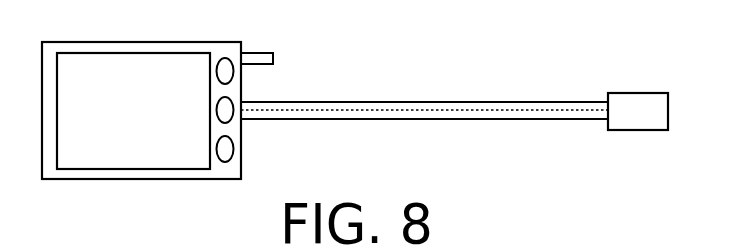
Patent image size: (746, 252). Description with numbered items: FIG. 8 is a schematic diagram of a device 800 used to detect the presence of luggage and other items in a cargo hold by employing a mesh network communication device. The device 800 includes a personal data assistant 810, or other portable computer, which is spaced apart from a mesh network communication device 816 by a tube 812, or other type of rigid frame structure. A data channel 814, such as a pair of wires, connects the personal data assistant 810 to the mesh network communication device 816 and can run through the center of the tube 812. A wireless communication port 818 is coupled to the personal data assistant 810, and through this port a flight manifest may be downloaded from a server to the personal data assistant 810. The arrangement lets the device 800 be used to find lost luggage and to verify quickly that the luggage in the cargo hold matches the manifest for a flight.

The device 800 is at (153, 42).
The personal data assistant 810 is at (82, 42).
The tube 812 is at (368, 102).
The data channel 814 is at (452, 110).
The mesh network communication device 816 is at (635, 93).
The wireless communication port 818 is at (262, 53).